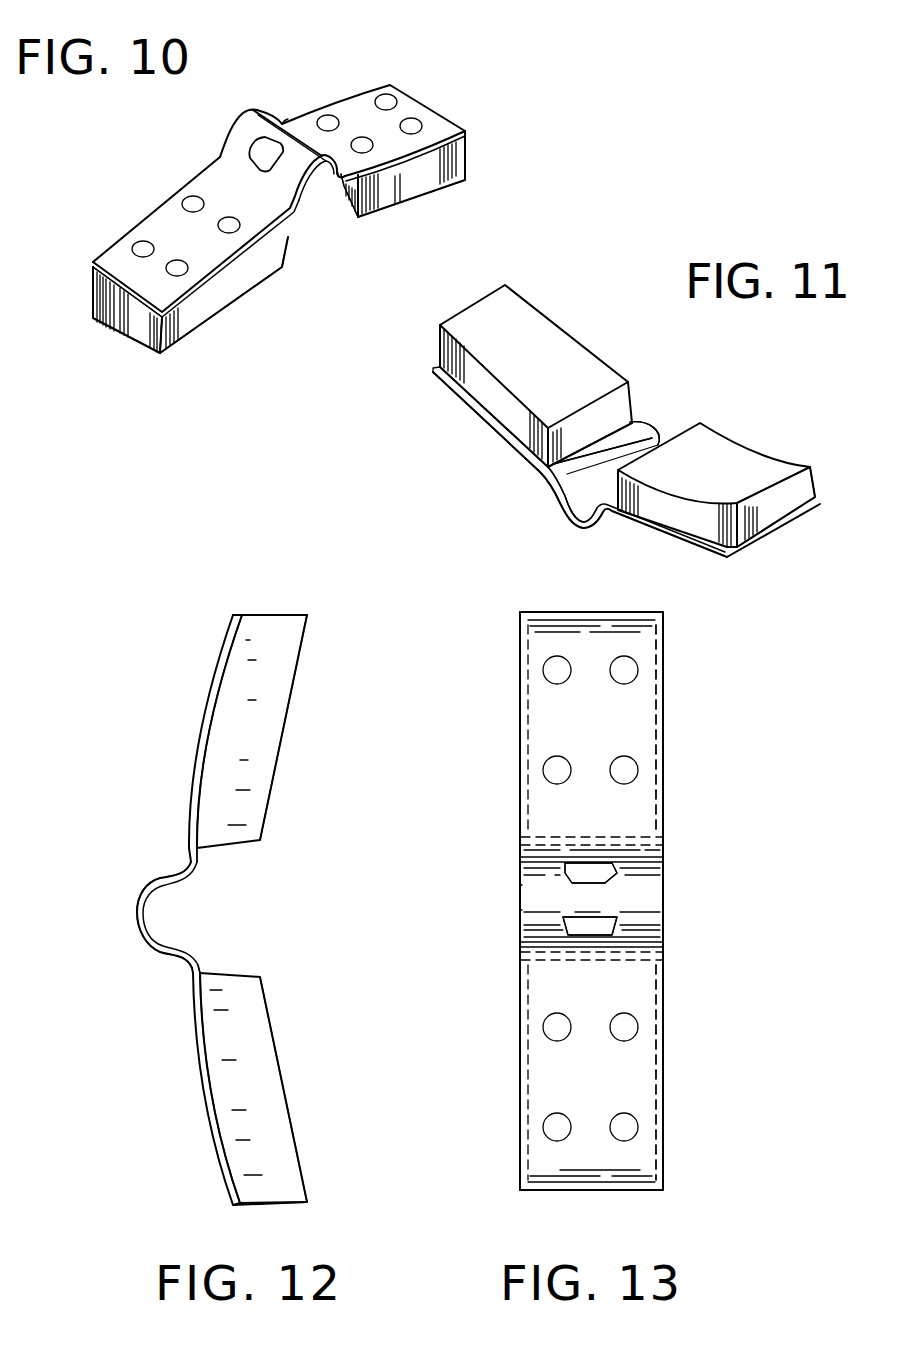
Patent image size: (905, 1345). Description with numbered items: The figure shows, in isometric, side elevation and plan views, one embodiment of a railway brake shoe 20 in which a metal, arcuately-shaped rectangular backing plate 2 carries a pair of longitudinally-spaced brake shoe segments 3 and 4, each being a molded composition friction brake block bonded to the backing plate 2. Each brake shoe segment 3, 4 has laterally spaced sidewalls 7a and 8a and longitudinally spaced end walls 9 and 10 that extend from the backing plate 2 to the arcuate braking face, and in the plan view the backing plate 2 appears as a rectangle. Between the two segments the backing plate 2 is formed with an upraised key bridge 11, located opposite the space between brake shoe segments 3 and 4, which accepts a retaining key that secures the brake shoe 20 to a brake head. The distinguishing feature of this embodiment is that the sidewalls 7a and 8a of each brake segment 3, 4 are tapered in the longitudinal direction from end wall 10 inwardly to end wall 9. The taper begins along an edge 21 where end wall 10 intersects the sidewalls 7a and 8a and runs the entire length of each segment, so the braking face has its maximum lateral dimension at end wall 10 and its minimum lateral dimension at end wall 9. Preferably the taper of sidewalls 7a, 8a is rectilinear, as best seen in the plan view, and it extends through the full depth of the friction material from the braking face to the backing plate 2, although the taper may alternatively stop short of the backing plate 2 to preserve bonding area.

In FIG. 10, the backing plate 2 is at (163, 210).
In FIG. 11, the backing plate 2 is at (686, 548).
In FIG. 12, the backing plate 2 is at (207, 752).
In FIG. 13, the backing plate 2 is at (553, 727).
In FIG. 10, the brake shoe segment 3 is at (208, 300).
In FIG. 11, the brake shoe segment 3 is at (583, 343).
In FIG. 12, the brake shoe segment 3 is at (245, 1045).
In FIG. 10, the brake shoe segment 4 is at (442, 158).
In FIG. 11, the brake shoe segment 4 is at (705, 515).
In FIG. 12, the brake shoe segment 4 is at (244, 740).
In FIG. 10, the sidewall 7a is at (250, 277).
In FIG. 12, the sidewall 7a is at (275, 675).
In FIG. 13, the sidewall 7a is at (658, 722).
In FIG. 11, the sidewall 8a is at (465, 378).
In FIG. 13, the sidewall 8a is at (528, 677).
In FIG. 10, the end wall 9 is at (122, 320).
In FIG. 11, the end wall 9 is at (784, 508).
In FIG. 12, the end wall 9 is at (271, 614).
In FIG. 13, the end wall 9 is at (566, 612).
In FIG. 10, the end wall 10 is at (338, 200).
In FIG. 11, the end wall 10 is at (620, 405).
In FIG. 12, the end wall 10 is at (248, 843).
In FIG. 13, the end wall 10 is at (665, 870).
In FIG. 10, the key bridge 11 is at (237, 130).
In FIG. 11, the key bridge 11 is at (582, 497).
In FIG. 12, the key bridge 11 is at (140, 905).
In FIG. 13, the key bridge 11 is at (530, 892).
In FIG. 10, the brake pad assembly 20 is at (302, 98).
In FIG. 11, the brake pad assembly 20 is at (730, 421).
In FIG. 12, the brake pad assembly 20 is at (195, 694).
In FIG. 13, the brake pad assembly 20 is at (682, 682).
In FIG. 10, the edge 21 is at (365, 205).
In FIG. 11, the edge 21 is at (550, 440).
In FIG. 13, the edge 21 is at (528, 840).